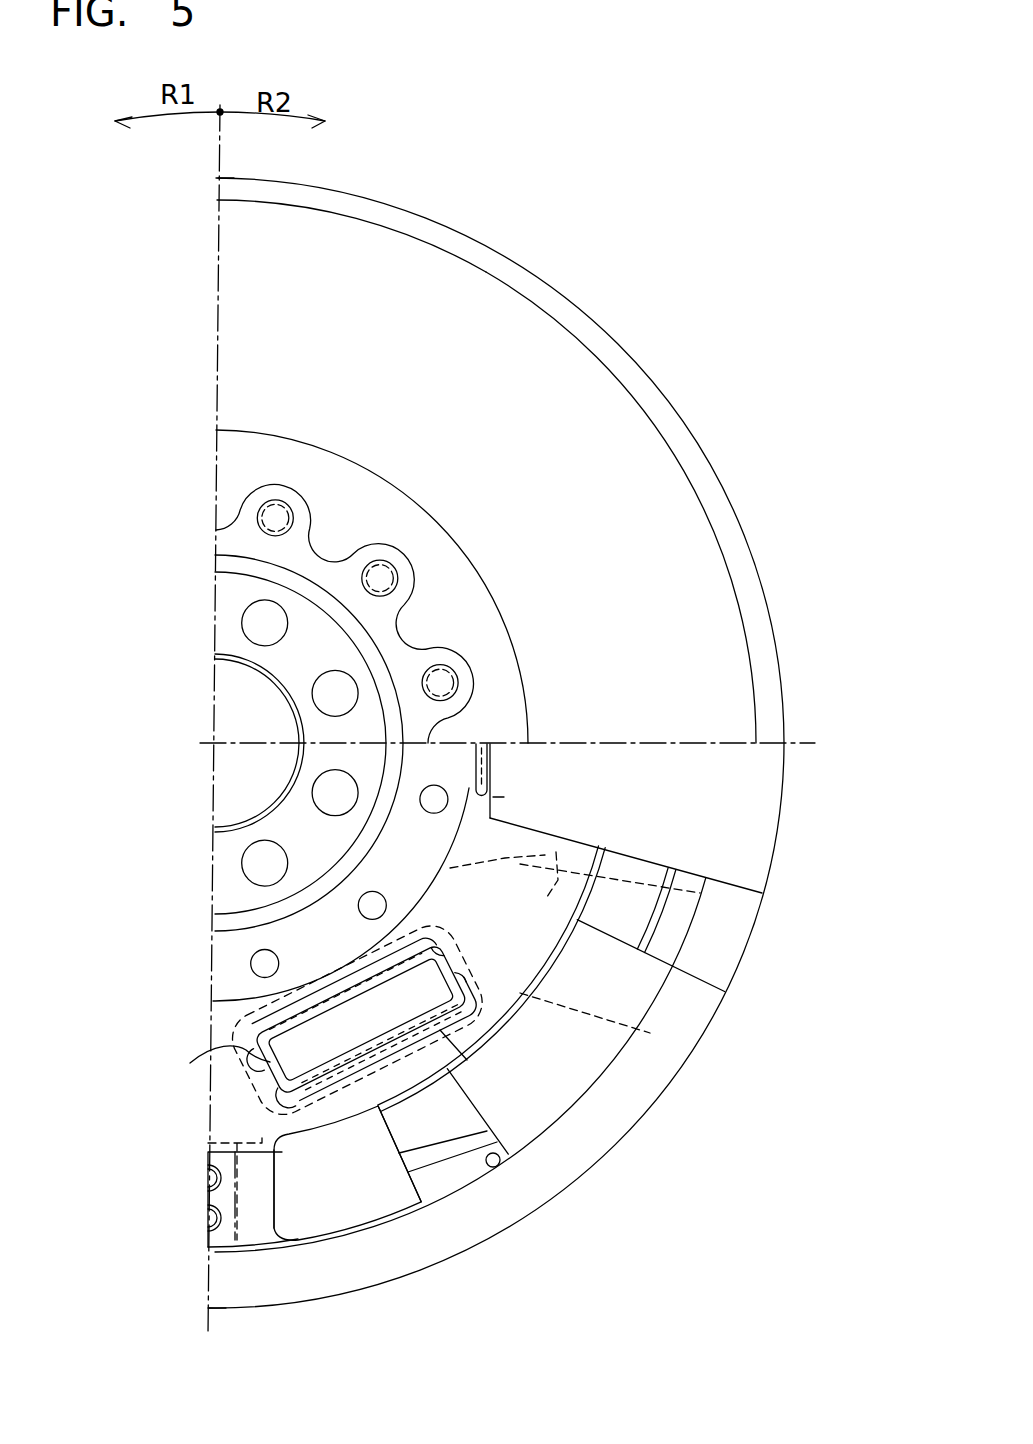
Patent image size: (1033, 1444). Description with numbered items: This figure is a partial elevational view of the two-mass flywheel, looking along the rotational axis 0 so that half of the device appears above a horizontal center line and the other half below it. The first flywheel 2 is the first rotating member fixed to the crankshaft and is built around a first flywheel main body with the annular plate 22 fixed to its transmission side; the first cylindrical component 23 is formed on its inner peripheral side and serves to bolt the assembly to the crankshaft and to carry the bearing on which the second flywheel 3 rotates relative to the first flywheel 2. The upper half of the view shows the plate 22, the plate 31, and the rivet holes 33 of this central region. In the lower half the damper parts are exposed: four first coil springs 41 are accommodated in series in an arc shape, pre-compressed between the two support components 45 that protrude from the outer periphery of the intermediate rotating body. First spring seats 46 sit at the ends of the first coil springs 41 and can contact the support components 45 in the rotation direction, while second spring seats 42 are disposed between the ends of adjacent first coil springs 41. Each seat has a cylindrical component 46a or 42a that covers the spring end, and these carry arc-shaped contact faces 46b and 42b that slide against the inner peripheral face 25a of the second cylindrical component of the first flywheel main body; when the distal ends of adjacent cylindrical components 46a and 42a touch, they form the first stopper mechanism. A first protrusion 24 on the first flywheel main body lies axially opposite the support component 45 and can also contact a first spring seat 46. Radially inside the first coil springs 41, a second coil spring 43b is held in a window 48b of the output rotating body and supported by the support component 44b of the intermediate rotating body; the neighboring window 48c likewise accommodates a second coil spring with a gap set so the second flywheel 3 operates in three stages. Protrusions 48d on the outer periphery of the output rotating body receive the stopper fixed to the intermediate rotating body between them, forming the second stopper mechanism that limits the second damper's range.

The rotation axis 0 is at (214, 746).
The first flywheel 2 is at (535, 267).
The second flywheel 3 is at (612, 363).
The annular plate 22 is at (236, 191).
The first cylindrical component 23 is at (238, 595).
The first protrusion 24 is at (200, 1220).
The inner peripheral face 25a is at (499, 1165).
The plate 31 is at (242, 302).
The rivet holes 33 is at (268, 510).
The first coil spring 41 is at (660, 915).
The second spring seat 42 is at (620, 1056).
The cylindrical component 42a is at (632, 975).
The contact face 42b is at (603, 1077).
The second coil spring 43b is at (287, 1056).
The support component 44b is at (467, 1060).
The support component 45 is at (204, 1250).
The first spring seat 46 is at (362, 1233).
The cylindrical component 46a is at (383, 1195).
The contact face 46b is at (333, 1236).
The window 48b is at (212, 1085).
The window 48c is at (700, 893).
The protrusion 48d is at (650, 1033).